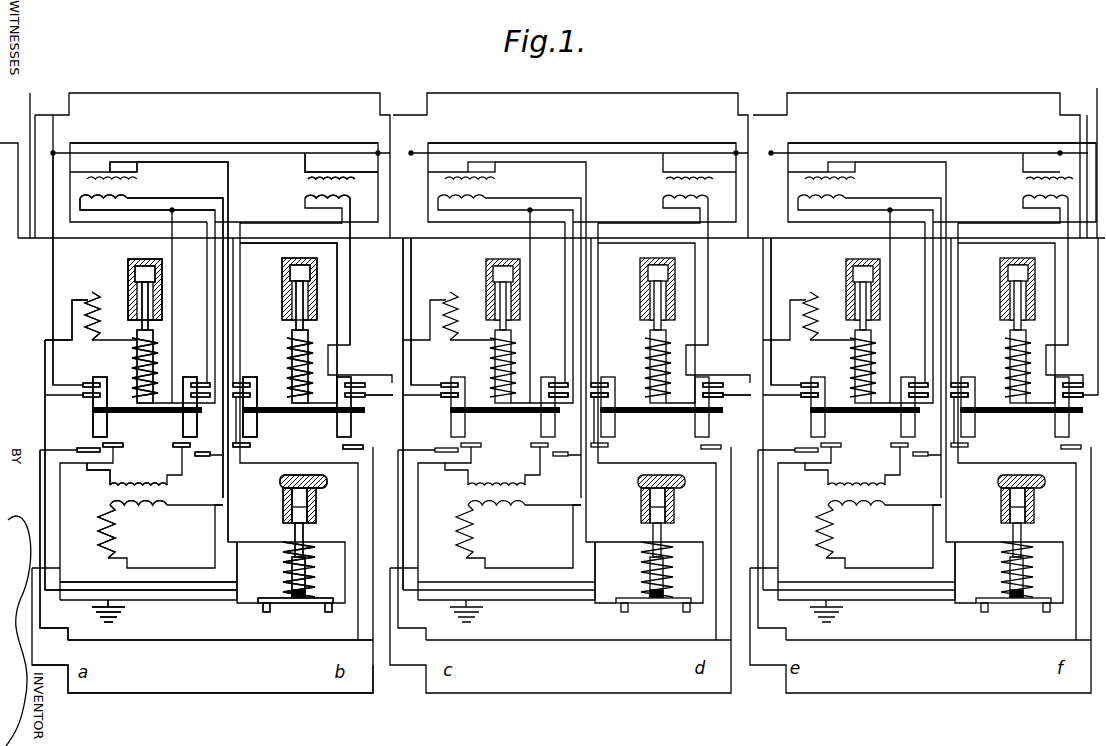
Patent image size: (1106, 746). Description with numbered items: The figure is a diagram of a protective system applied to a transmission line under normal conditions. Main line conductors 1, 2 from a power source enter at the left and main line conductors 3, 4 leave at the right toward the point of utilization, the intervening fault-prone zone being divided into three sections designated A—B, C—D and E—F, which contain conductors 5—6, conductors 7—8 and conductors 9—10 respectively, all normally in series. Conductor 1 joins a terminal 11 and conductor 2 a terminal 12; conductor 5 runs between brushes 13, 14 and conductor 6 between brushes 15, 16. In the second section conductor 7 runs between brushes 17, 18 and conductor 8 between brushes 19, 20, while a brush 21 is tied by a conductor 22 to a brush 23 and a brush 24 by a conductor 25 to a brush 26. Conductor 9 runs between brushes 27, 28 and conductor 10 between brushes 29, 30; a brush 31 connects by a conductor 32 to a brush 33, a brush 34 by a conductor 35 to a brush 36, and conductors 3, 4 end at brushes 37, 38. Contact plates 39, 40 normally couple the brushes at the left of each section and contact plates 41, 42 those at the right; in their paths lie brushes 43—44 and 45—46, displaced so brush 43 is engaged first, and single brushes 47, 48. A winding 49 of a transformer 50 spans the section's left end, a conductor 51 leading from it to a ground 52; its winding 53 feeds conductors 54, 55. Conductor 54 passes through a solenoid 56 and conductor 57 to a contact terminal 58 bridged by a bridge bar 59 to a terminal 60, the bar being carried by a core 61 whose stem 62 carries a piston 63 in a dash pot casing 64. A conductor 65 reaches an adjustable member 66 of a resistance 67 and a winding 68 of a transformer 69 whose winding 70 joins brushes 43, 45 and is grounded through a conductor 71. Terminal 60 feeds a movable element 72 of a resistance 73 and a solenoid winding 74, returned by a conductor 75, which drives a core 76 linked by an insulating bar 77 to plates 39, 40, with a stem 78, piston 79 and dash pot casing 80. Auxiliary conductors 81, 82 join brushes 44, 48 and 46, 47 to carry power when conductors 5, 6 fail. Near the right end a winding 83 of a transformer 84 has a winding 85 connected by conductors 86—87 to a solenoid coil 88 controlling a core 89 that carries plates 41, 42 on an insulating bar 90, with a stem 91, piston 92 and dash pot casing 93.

The main line conductor 1 is at (30, 93).
The main line conductor 2 is at (22, 122).
The main line conductor 3 is at (1097, 88).
The main line conductor 4 is at (1087, 125).
The conductor 5 is at (226, 93).
The conductor 6 is at (228, 143).
The conductor 7 is at (593, 93).
The conductor 8 is at (593, 143).
The conductor 9 is at (920, 93).
The conductor 10 is at (920, 143).
The terminal 11 is at (86, 397).
The terminal 12 is at (200, 399).
The brush 13 is at (88, 383).
The brush 14 is at (357, 383).
The brush 15 is at (200, 383).
The brush 16 is at (240, 383).
The brush 17 is at (448, 383).
The brush 18 is at (715, 383).
The brush 19 is at (556, 383).
The brush 20 is at (600, 383).
The brush 21 is at (240, 397).
The conductor 22 is at (449, 244).
The brush 23 is at (558, 399).
The brush 24 is at (364, 398).
The conductor 25 is at (405, 398).
The brush 26 is at (444, 399).
The brush 27 is at (808, 383).
The brush 28 is at (1073, 383).
The brush 29 is at (916, 383).
The brush 30 is at (958, 383).
The brush 31 is at (597, 399).
The conductor 32 is at (806, 244).
The brush 33 is at (918, 399).
The brush 34 is at (715, 399).
The conductor 35 is at (730, 399).
The brush 36 is at (803, 399).
The brush 37 is at (1071, 399).
The brush 38 is at (955, 399).
The contact plate 39 is at (108, 428).
The contact plate 40 is at (183, 428).
The contact plate 41 is at (258, 430).
The contact plate 42 is at (337, 430).
The brush 43 is at (123, 446).
The brush 44 is at (77, 452).
The brush 45 is at (176, 448).
The brush 46 is at (200, 457).
The brush 47 is at (250, 446).
The brush 48 is at (343, 447).
The winding 49 is at (105, 165).
The transformer 50 is at (130, 192).
The conductor 51 is at (229, 178).
The ground 52 is at (125, 608).
The winding 53 is at (95, 195).
The conductor 54 is at (220, 202).
The conductor 55 is at (112, 212).
The solenoid 56 is at (316, 565).
The conductor 57 is at (316, 582).
The contact terminal 58 is at (329, 612).
The bridge bar 59 is at (290, 601).
The contact terminal 60 is at (266, 612).
The core 61 is at (292, 590).
The stem 62 is at (304, 535).
The piston 63 is at (292, 510).
The dash pot casing 64 is at (317, 500).
The conductor 65 is at (170, 581).
The adjustable member 66 is at (114, 538).
The adjustable resistance 67 is at (99, 526).
The winding 68 is at (148, 504).
The transformer 69 is at (110, 489).
The winding 70 is at (166, 484).
The conductor 71 is at (47, 546).
The movable element 72 is at (86, 298).
The adjustable resistance 73 is at (94, 294).
The solenoid winding 74 is at (133, 358).
The conductor 75 is at (165, 300).
The core 76 is at (153, 339).
The bar 77 is at (121, 404).
The stem 78 is at (138, 332).
The piston 79 is at (150, 276).
The dash pot casing 80 is at (142, 280).
The conductor 81 is at (38, 452).
The conductor 82 is at (214, 694).
The winding 83 is at (318, 153).
The transformer 84 is at (306, 183).
The winding 85 is at (305, 198).
The conductor 86 is at (337, 262).
The conductor 87 is at (352, 268).
The solenoid coil 88 is at (292, 340).
The core 89 is at (289, 376).
The bar 90 is at (289, 393).
The stem 91 is at (299, 305).
The piston 92 is at (298, 278).
The dash pot casing 93 is at (315, 283).
The section end A is at (77, 122).
The section end B is at (352, 122).
The section end C is at (448, 120).
The section end D is at (714, 120).
The section end E is at (805, 120).
The section end F is at (1038, 118).